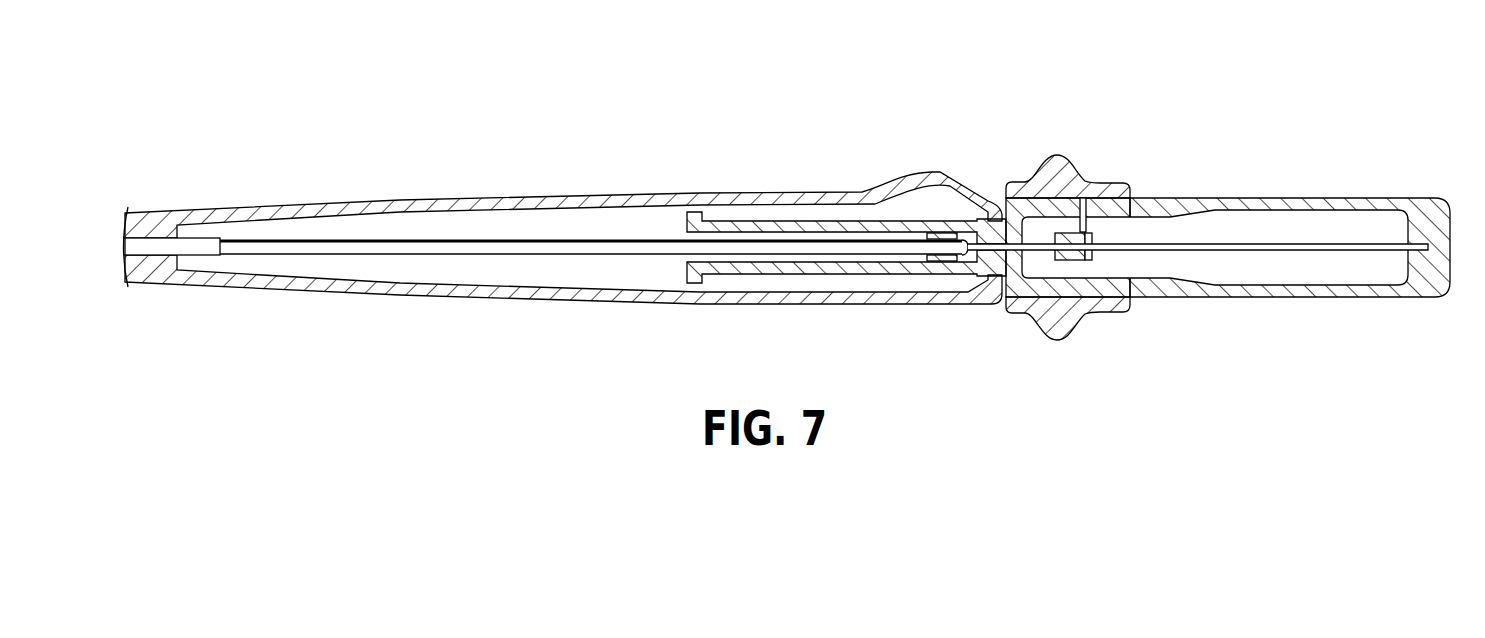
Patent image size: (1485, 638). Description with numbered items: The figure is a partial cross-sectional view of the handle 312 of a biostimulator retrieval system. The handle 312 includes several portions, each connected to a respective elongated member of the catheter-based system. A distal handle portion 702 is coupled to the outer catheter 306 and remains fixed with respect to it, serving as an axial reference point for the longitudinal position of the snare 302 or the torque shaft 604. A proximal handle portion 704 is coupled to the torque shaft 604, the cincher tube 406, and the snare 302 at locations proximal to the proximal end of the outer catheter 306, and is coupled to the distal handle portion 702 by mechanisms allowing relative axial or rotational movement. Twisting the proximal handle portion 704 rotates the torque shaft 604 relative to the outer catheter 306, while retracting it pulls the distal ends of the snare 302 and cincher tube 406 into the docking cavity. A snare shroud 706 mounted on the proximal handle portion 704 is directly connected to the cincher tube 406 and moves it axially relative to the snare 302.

The handle 312 is at (1327, 65).
The outer catheter 306 is at (187, 244).
The torque shaft 604 is at (471, 246).
The distal handle portion 702 is at (554, 201).
The cincher tube 406 is at (1000, 252).
The snare shroud 706 is at (1044, 175).
The snare 302 is at (1257, 247).
The proximal handle portion 704 is at (1327, 205).